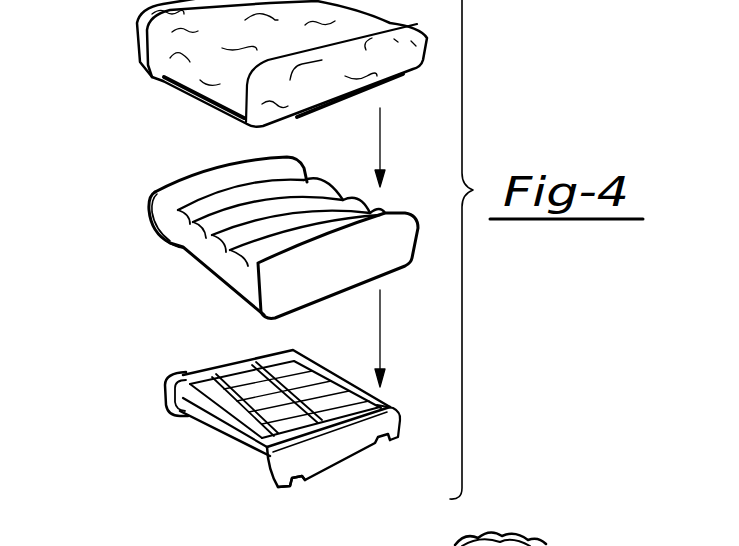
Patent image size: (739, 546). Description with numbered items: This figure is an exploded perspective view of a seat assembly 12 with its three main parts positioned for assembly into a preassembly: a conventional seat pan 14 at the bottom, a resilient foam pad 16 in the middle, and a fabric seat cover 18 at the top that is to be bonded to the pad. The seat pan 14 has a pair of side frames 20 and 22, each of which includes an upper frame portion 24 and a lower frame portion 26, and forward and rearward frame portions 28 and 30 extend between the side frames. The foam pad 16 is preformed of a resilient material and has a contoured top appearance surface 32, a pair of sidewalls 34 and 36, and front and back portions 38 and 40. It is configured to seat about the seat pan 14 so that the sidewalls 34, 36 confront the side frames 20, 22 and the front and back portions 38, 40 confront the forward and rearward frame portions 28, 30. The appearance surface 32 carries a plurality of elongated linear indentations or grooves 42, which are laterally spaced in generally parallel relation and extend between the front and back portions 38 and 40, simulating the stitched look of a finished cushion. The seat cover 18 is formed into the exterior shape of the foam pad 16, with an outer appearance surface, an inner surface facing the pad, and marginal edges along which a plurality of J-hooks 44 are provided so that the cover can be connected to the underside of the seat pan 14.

The seat assembly 12 is at (484, 281).
The seat pan 14 is at (263, 427).
The foam pad 16 is at (252, 224).
The seat cover 18 is at (132, 25).
The side frame 20 is at (190, 372).
The side frame 22 is at (337, 438).
The upper frame portion 24 is at (216, 372).
The lower frame portion 26 is at (294, 488).
The forward frame portion 28 is at (227, 436).
The rearward frame portion 30 is at (338, 378).
The contoured top appearance surface 32 is at (172, 240).
The sidewall 34 is at (157, 190).
The sidewall 36 is at (383, 246).
The front portion 38 is at (234, 257).
The back portion 40 is at (384, 212).
The grooves 42 is at (306, 196).
The J-hooks 44 is at (204, 103).